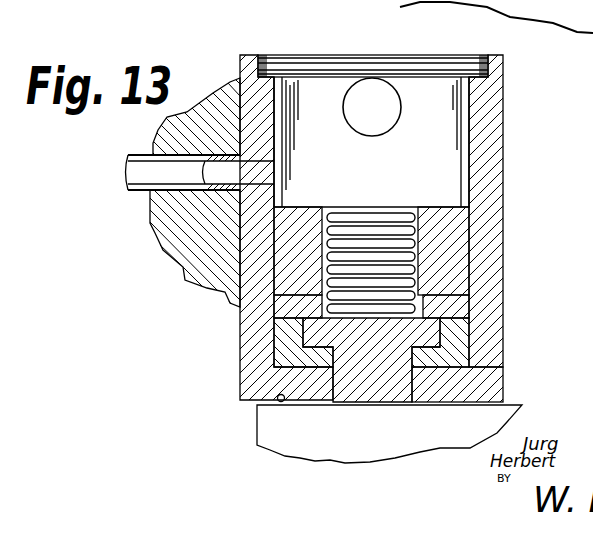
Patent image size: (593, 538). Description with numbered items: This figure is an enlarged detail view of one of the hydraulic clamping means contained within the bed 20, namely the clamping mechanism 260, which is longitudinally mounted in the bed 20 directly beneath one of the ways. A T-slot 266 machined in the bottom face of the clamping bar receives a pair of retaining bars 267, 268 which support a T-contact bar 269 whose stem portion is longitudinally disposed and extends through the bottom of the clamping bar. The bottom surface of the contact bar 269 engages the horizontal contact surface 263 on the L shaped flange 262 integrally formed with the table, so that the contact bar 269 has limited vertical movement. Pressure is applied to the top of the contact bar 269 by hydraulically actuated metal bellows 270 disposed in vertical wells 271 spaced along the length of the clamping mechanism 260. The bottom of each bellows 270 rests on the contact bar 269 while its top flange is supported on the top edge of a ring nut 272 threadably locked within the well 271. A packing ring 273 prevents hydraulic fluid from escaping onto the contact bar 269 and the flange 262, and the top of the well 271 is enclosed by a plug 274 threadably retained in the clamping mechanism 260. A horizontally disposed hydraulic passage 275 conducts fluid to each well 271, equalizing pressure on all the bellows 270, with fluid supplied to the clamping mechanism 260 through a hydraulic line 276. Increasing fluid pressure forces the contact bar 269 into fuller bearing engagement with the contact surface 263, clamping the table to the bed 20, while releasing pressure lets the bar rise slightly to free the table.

The bed 20 is at (167, 228).
The clamping mechanism 260 is at (517, 147).
The L shaped flange 262 is at (335, 452).
The horizontal contact surface 263 is at (282, 404).
The T-slot 266 is at (452, 370).
The retaining bar 267 is at (285, 347).
The retaining bar 268 is at (455, 343).
The T-contact bar 269 is at (387, 380).
The metal bellows 270 is at (363, 238).
The vertical well 271 is at (469, 187).
The ring nut 272 is at (450, 228).
The packing ring 273 is at (450, 307).
The plug 274 is at (368, 33).
The hydraulic passage 275 is at (394, 114).
The hydraulic line 276 is at (132, 163).